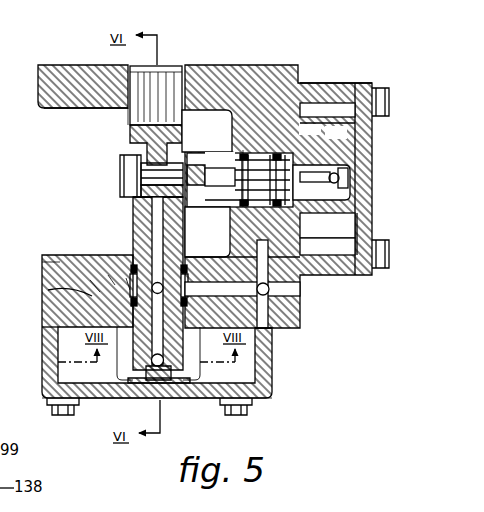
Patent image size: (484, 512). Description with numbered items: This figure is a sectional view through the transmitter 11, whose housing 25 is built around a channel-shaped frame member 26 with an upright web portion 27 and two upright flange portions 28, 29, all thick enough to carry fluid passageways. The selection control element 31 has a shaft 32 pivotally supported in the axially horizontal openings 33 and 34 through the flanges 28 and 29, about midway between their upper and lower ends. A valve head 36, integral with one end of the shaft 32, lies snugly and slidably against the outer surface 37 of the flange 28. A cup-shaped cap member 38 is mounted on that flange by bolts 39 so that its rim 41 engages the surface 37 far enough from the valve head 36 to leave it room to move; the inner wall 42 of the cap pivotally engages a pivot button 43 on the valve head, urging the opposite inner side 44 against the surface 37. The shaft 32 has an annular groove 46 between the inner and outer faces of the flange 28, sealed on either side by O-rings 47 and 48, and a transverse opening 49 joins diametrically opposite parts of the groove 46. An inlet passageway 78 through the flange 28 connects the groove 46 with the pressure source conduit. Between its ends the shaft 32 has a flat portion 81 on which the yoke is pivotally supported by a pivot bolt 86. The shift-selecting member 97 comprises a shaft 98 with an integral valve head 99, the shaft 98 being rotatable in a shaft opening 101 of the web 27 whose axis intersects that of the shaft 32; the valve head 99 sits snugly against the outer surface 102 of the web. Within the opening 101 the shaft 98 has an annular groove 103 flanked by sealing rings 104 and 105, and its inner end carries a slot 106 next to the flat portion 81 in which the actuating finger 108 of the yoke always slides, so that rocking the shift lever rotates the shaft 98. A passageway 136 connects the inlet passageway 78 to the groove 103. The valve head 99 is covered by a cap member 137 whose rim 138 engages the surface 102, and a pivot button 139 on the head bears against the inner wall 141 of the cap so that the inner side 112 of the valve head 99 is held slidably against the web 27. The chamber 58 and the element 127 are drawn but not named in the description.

The transmitter 11 is at (60, 48).
The housing 25 is at (267, 64).
The channel-shaped frame member 26 is at (60, 109).
The web portion 27 is at (238, 121).
The flange portion 28 is at (95, 318).
The flange portion 29 is at (48, 77).
The selection control element 31 is at (128, 141).
The shaft 32 is at (133, 220).
The opening 33 is at (136, 274).
The opening 34 is at (130, 112).
The valve head 36 is at (199, 383).
The outer surface 37 is at (44, 347).
The cup-shaped cap member 38 is at (97, 400).
The bolts 39 is at (64, 414).
The rim 41 is at (273, 345).
The inner wall 42 is at (132, 384).
The pivot button 43 is at (152, 396).
The inner side 44 is at (48, 290).
The annular groove 46 is at (90, 280).
The O-ring 47 is at (108, 275).
The O-ring 48 is at (48, 266).
The transverse opening 49 is at (126, 278).
The chamber 58 is at (133, 380).
The inlet passageway 78 is at (296, 294).
The flat portion 81 is at (140, 207).
The pivot bolt 86 is at (150, 176).
The shift-selecting member 97 is at (243, 150).
The shaft 98 is at (242, 220).
The valve head 99 is at (348, 160).
The shaft opening 101 is at (327, 111).
The outer surface 102 is at (327, 225).
The annular groove 103 is at (327, 247).
The sealing ring 104 is at (242, 251).
The sealing ring 105 is at (241, 172).
The slot 106 is at (220, 186).
The actuating finger 108 is at (199, 163).
The inner side 112 is at (327, 129).
The bolt 127 is at (362, 141).
The passageway 136 is at (318, 276).
The cap member 137 is at (330, 78).
The rim 138 is at (305, 84).
The pivot button 139 is at (350, 177).
The inner wall 141 is at (360, 220).